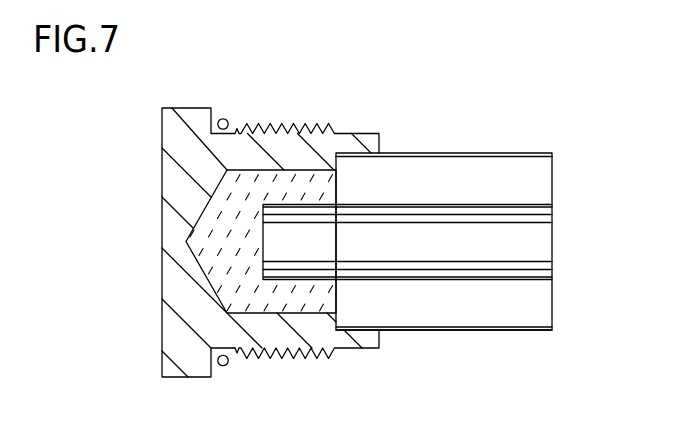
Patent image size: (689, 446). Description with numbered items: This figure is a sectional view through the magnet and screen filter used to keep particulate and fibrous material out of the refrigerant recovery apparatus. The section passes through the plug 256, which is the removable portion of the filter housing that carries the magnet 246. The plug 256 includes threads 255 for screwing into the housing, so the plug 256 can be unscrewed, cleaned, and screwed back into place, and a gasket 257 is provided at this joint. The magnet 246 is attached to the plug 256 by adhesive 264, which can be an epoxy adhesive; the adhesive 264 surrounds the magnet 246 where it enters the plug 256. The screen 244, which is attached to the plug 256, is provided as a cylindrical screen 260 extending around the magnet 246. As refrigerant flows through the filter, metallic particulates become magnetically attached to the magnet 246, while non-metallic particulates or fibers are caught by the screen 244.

The screen 244 is at (493, 331).
The magnet 246 is at (520, 242).
The threads 255 is at (295, 132).
The plug 256 is at (178, 345).
The gasket 257 is at (224, 118).
The cylindrical screen 260 is at (485, 153).
The adhesive 264 is at (263, 302).